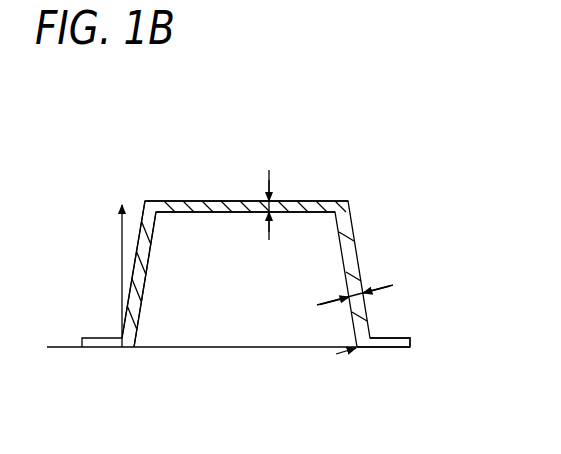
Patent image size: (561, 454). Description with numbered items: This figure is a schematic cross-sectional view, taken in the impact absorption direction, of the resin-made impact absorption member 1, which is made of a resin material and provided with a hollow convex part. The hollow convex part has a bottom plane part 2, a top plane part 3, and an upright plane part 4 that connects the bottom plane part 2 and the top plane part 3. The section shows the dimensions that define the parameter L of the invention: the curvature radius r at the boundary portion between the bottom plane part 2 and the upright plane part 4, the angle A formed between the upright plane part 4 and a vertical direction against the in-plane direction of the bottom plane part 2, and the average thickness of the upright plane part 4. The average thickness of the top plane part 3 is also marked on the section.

The resin-made impact absorption member 1 is at (189, 167).
The bottom plane part 2 is at (397, 349).
The top plane part 3 is at (316, 201).
The upright plane part 4 is at (143, 296).